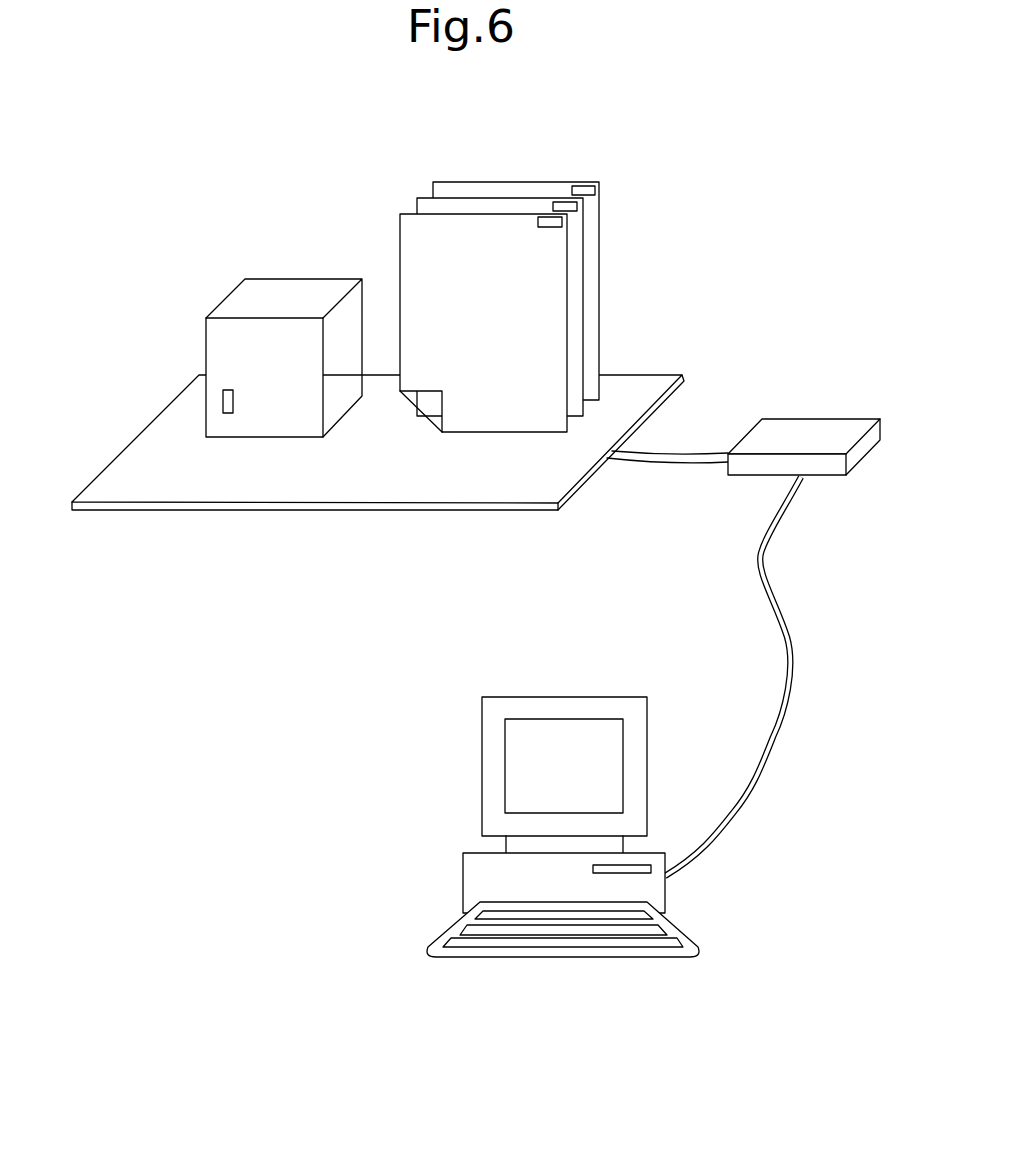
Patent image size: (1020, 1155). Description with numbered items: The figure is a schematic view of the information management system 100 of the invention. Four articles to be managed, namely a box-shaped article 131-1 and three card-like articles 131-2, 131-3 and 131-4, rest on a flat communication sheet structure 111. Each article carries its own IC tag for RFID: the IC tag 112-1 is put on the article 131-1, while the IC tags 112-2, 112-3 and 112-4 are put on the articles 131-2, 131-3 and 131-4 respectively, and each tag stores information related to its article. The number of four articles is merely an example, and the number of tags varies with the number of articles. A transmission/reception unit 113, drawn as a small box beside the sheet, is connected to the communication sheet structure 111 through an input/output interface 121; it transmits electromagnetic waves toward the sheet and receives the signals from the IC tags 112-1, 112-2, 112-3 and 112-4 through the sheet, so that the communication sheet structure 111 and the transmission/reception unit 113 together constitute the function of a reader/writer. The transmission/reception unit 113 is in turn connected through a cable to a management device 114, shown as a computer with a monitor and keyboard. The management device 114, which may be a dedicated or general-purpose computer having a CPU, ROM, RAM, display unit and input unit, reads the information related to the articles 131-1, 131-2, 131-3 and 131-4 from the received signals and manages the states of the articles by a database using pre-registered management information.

The information management system 100 is at (292, 808).
The communication sheet structure 111 is at (268, 513).
The IC tag for RFID 112-1 is at (223, 403).
The IC tag for RFID 112-2 is at (543, 217).
The IC tag for RFID 112-3 is at (560, 202).
The IC tag for RFID 112-4 is at (590, 186).
The transmission/reception unit 113 is at (813, 418).
The management device 114 is at (463, 870).
The input/output interface 121 is at (600, 463).
The article to be managed 131-1 is at (232, 329).
The article to be managed 131-2 is at (470, 286).
The article to be managed 131-3 is at (507, 265).
The article to be managed 131-4 is at (537, 245).